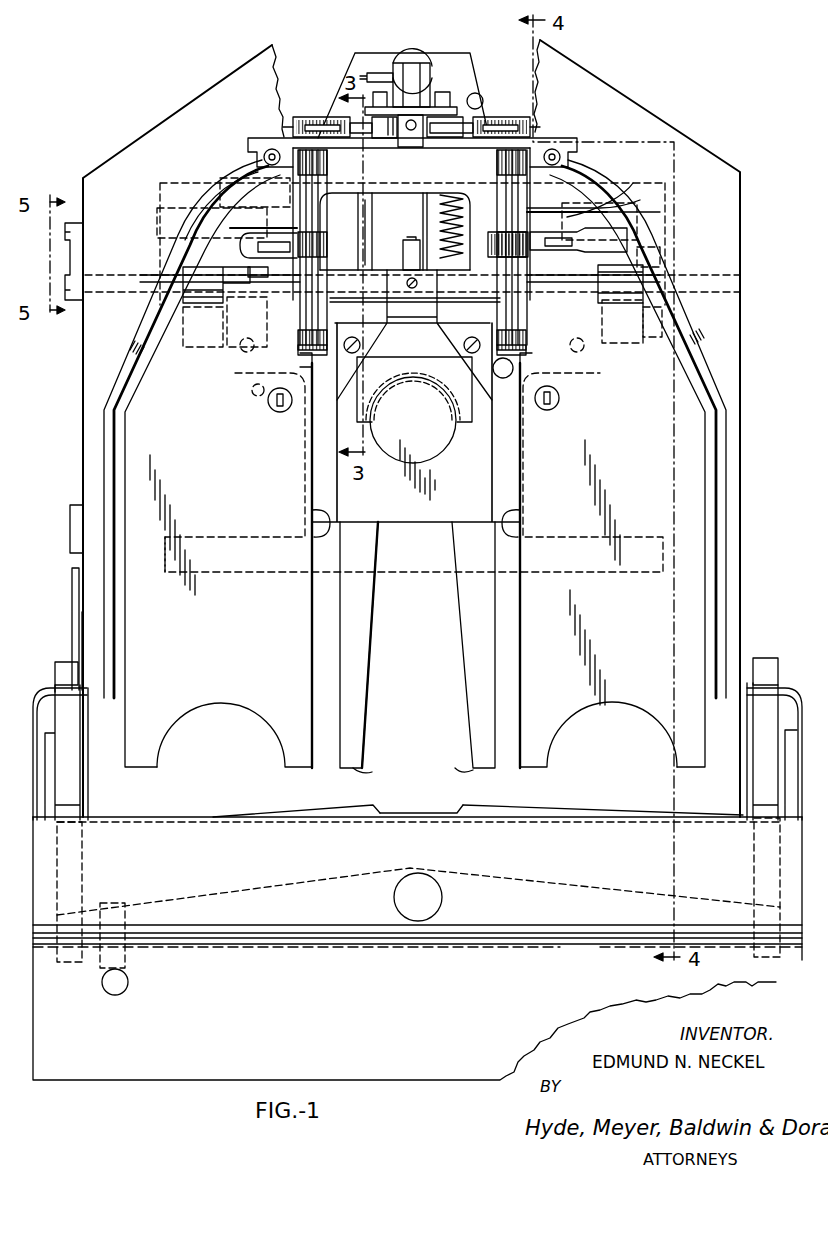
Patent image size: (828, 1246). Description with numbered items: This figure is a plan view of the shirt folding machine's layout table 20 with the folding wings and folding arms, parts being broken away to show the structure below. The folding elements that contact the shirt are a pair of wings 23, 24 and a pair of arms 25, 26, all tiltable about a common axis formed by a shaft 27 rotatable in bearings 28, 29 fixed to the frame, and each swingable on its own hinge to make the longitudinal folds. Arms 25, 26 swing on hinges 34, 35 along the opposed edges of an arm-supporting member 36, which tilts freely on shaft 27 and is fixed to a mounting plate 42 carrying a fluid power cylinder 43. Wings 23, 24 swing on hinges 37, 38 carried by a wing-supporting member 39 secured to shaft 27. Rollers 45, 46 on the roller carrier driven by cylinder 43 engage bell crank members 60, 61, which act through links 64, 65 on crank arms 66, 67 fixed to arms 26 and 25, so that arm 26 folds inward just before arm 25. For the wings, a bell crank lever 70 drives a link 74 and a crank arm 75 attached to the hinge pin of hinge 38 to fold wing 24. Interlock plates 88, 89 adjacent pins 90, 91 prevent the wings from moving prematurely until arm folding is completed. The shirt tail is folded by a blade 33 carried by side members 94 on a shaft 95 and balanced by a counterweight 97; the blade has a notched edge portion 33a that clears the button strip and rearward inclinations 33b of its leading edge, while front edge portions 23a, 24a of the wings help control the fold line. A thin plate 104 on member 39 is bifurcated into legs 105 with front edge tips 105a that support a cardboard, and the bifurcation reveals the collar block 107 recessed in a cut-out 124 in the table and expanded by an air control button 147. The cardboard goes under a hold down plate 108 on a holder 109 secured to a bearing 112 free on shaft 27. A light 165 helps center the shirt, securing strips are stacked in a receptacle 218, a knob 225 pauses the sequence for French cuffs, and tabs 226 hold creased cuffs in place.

The layout table 20 is at (740, 332).
The wing 23 is at (218, 471).
The front edge portion of wing 23a is at (148, 769).
The wing 24 is at (627, 471).
The front edge portion of wing 24a is at (543, 769).
The folding arm 25 is at (152, 319).
The folding arm 26 is at (684, 334).
The shaft 27 is at (237, 283).
The bearing 28 is at (212, 290).
The bearing 29 is at (623, 287).
The blade 33 is at (341, 810).
The notched edge portion 33a is at (383, 812).
The rearward inclinations 33b is at (250, 812).
The hinge 34 is at (307, 117).
The hinge 35 is at (520, 117).
The arm-supporting member 36 is at (410, 183).
The hinge 37 is at (313, 322).
The hinge 38 is at (513, 322).
The wing-supporting member 39 is at (413, 335).
The mounting plate 42 is at (399, 133).
The fluid power cylinder 43 is at (418, 62).
The roller 45 is at (465, 110).
The roller 46 is at (400, 135).
The bell crank member 60 is at (463, 130).
The bell crank member 61 is at (373, 133).
The link 64 is at (525, 127).
The link 65 is at (295, 127).
The crank arm 66 is at (506, 120).
The crank arm 67 is at (324, 120).
The bell crank lever 70 is at (662, 227).
The link 74 is at (537, 250).
The crank arm 75 is at (492, 255).
The interlock plate 88 is at (597, 222).
The interlock plate 89 is at (297, 210).
The pin 90 is at (493, 231).
The pin 91 is at (240, 240).
The side member 94 is at (63, 662).
The shaft 95 is at (52, 678).
The counterweight 97 is at (82, 520).
The thin plate 104 is at (345, 370).
The leg 105 is at (468, 615).
The front edge tip 105a is at (460, 773).
The collar block 107 is at (445, 451).
The hold down plate 108 is at (415, 389).
The holder 109 is at (438, 470).
The bearing 112 is at (381, 268).
The cut-out 124 is at (312, 512).
The air control button 147 is at (504, 380).
The light 165 is at (442, 898).
The receptacle 218 is at (588, 572).
The knob 225 is at (120, 986).
The tab 226 is at (267, 405).